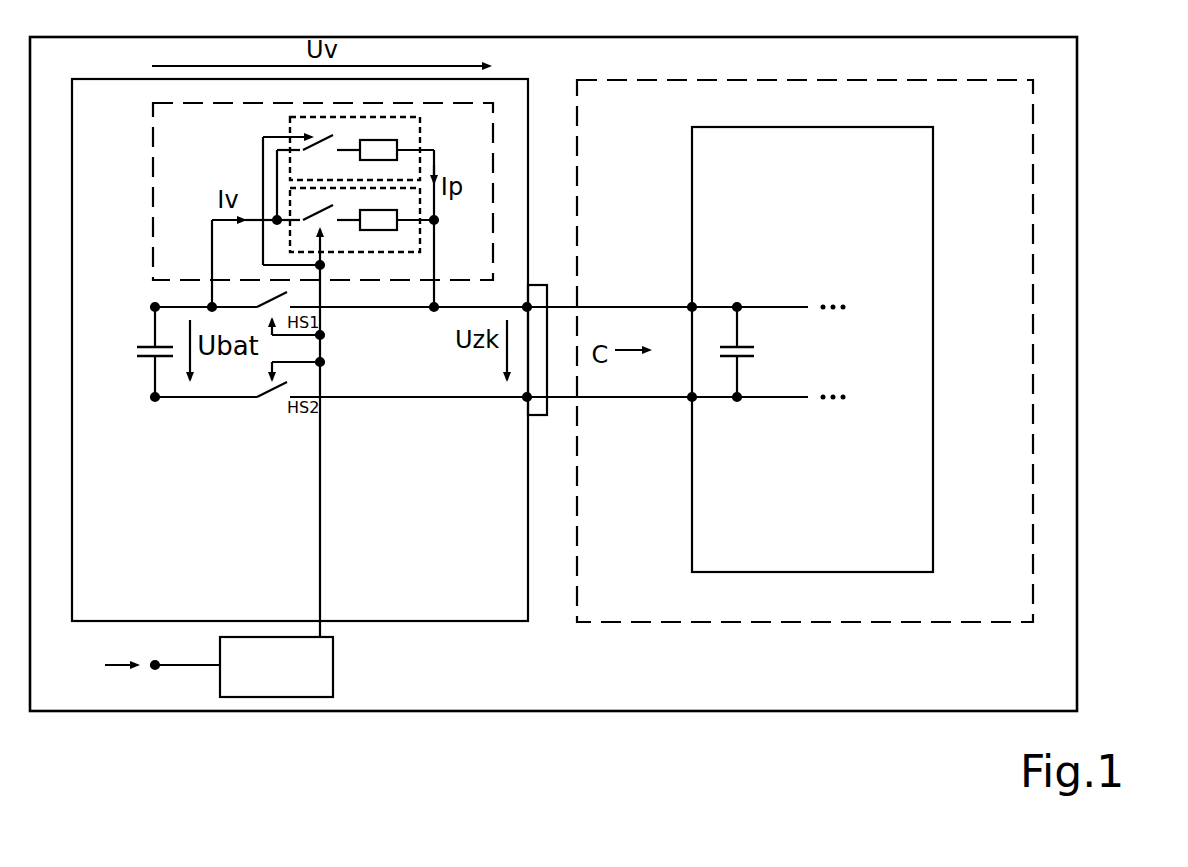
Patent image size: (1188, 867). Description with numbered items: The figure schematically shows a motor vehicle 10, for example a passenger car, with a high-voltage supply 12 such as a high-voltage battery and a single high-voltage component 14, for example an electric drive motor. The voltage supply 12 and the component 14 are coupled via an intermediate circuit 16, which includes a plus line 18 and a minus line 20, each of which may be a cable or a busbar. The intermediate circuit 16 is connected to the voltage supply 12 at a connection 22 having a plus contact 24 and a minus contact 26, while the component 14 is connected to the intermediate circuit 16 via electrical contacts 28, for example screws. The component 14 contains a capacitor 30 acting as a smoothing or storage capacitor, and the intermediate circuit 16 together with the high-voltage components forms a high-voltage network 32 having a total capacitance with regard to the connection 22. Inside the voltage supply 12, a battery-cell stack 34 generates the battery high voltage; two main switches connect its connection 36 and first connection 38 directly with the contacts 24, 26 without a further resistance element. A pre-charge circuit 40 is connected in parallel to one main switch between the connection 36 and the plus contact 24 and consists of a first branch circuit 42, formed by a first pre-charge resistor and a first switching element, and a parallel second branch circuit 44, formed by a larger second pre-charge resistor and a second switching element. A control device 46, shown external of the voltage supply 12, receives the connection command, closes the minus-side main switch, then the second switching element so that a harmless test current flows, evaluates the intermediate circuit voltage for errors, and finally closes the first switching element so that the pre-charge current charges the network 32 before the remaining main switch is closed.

The motor vehicle 10 is at (1078, 645).
The high-voltage supply 12 is at (508, 622).
The high-voltage component 14 is at (933, 262).
The intermediate circuit 16 is at (629, 282).
The plus line 18 is at (583, 305).
The minus line 20 is at (618, 400).
The connection 22 is at (537, 418).
The plus contact 24 is at (535, 285).
The minus contact 26 is at (527, 400).
The electrical contacts 28 is at (691, 305).
The capacitor 30 is at (746, 345).
The high-voltage network 32 is at (1034, 162).
The battery-cell stack 34 is at (140, 343).
The connection of the stack 36 is at (160, 283).
The first connection of the stack 38 is at (153, 398).
The pre-charge circuit 40 is at (493, 145).
The first branch circuit 42 is at (434, 222).
The second branch circuit 44 is at (420, 130).
The control device 46 is at (320, 697).